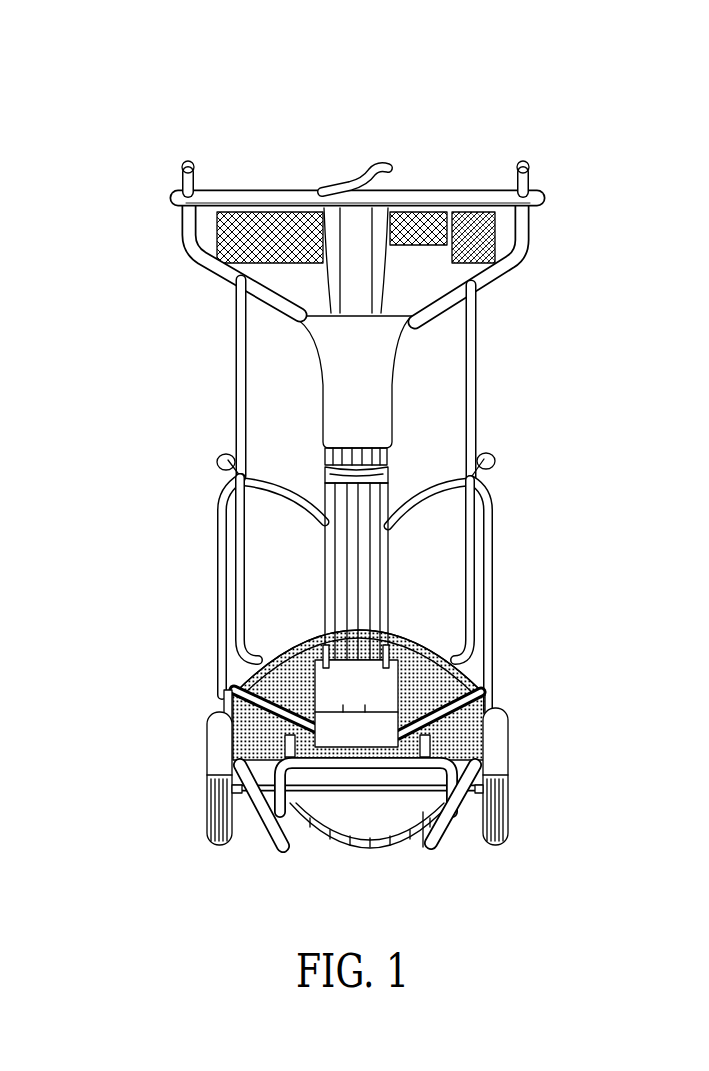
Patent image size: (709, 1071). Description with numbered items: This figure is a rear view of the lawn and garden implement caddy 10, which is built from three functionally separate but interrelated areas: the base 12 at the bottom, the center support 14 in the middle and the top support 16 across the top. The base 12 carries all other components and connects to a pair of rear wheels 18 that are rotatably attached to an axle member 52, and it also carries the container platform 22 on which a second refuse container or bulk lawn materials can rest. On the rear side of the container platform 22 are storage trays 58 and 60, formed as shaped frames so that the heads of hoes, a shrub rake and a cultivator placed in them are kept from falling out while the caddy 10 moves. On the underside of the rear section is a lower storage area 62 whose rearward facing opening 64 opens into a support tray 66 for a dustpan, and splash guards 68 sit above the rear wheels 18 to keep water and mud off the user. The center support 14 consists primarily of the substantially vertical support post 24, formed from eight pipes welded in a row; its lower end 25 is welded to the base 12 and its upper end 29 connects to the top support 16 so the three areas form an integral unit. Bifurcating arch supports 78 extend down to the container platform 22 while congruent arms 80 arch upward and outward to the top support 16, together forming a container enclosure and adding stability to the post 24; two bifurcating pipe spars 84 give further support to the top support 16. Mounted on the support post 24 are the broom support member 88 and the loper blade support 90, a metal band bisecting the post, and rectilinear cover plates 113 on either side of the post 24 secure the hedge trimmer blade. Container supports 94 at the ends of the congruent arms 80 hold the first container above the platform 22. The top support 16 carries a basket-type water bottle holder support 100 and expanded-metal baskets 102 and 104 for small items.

The lawn and garden implement caddy 10 is at (396, 498).
The base 12 is at (357, 741).
The center support 14 is at (368, 413).
The top support 16 is at (553, 219).
The rear wheels 18 is at (501, 801).
The container platform 22 is at (292, 645).
The support post 24 is at (368, 583).
The lower end 25 is at (356, 669).
The upper end 29 is at (408, 360).
The axle member 52 is at (240, 797).
The storage tray 58 is at (226, 703).
The storage tray 60 is at (480, 686).
The lower storage area 62 is at (440, 846).
The rearward facing opening 64 is at (395, 830).
The support tray 66 is at (323, 832).
The splash guards 68 is at (531, 776).
The arch supports 78 is at (498, 537).
The congruent arms 80 is at (205, 265).
The bifurcating pipe spars 84 is at (238, 395).
The broom support member 88 is at (335, 690).
The loper blade support 90 is at (375, 462).
The container supports 94 is at (186, 158).
The water bottle holder support 100 is at (470, 250).
The basket 102 is at (225, 228).
The basket 104 is at (422, 213).
The rectilinear cover plates 113 is at (348, 336).